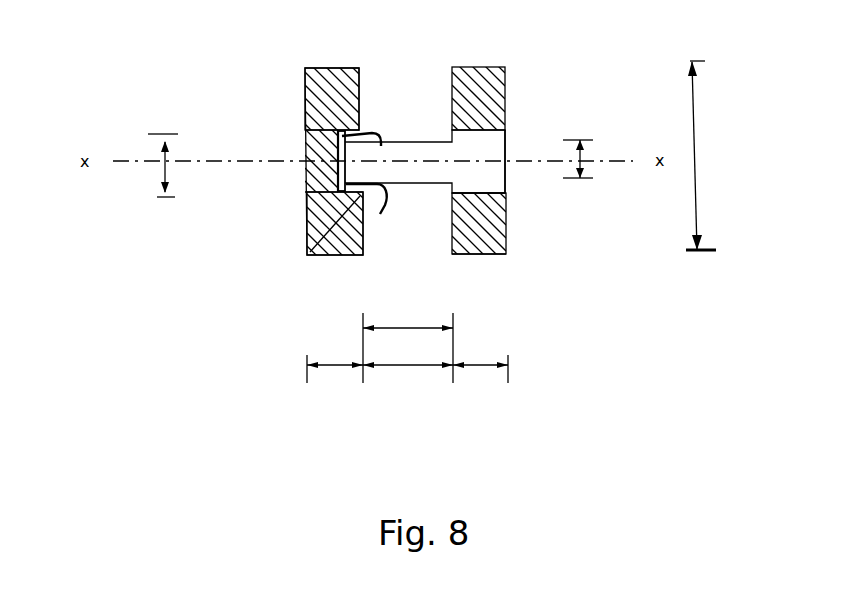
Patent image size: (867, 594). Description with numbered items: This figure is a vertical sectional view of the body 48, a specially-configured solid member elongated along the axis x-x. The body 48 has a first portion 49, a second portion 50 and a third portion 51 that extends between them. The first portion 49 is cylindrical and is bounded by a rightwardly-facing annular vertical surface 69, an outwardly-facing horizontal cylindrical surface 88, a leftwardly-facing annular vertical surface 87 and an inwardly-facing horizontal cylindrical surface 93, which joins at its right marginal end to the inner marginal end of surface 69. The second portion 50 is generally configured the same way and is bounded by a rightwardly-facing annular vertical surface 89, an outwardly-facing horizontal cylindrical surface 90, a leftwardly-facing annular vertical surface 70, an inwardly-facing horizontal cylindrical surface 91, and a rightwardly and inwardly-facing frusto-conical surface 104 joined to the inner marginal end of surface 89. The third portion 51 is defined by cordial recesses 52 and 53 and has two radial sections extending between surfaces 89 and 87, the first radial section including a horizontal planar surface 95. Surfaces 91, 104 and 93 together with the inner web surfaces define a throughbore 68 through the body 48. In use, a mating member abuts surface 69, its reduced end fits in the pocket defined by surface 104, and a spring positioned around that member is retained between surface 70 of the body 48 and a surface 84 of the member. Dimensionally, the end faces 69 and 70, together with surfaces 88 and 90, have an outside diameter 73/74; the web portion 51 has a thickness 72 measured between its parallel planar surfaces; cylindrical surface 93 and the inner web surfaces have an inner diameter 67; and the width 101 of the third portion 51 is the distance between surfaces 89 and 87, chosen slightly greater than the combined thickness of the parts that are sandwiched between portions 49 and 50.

The body 48 is at (182, 277).
The first portion 49 is at (480, 366).
The second portion 50 is at (330, 366).
The third portion 51 is at (405, 366).
The cordial recess 52 is at (398, 117).
The cordial recess 53 is at (400, 212).
The inner diameter 67 is at (158, 170).
The throughbore 68 is at (514, 169).
The rightwardly-facing annular vertical surface 69 is at (505, 97).
The leftwardly-facing annular vertical surface 70 is at (306, 126).
The thickness 72 is at (583, 150).
The outside diameter 73 is at (742, 155).
The outside diameter 74 is at (698, 152).
The surface of member 84 is at (362, 253).
The leftwardly-facing annular vertical surface 87 is at (454, 221).
The outwardly-facing horizontal cylindrical surface 88 is at (484, 254).
The rightwardly-facing annular vertical surface 89 is at (362, 88).
The outwardly-facing horizontal cylindrical surface 90 is at (318, 67).
The inwardly-facing horizontal cylindrical surface 91 is at (337, 133).
The inwardly-facing horizontal cylindrical surface 93 is at (487, 193).
The horizontal planar surface 95 is at (338, 135).
The width 101 is at (408, 343).
The frusto-conical surface 104 is at (308, 241).